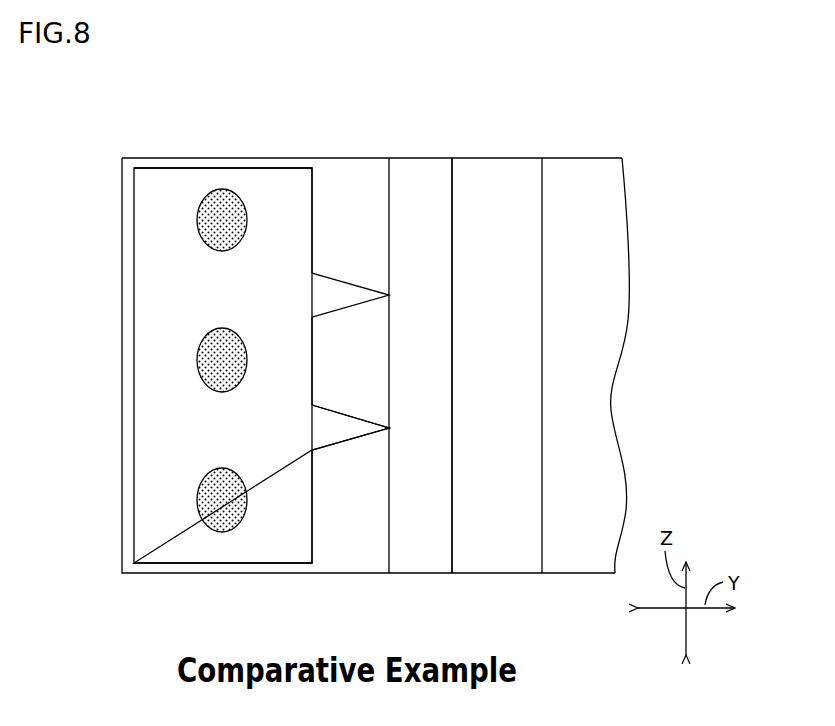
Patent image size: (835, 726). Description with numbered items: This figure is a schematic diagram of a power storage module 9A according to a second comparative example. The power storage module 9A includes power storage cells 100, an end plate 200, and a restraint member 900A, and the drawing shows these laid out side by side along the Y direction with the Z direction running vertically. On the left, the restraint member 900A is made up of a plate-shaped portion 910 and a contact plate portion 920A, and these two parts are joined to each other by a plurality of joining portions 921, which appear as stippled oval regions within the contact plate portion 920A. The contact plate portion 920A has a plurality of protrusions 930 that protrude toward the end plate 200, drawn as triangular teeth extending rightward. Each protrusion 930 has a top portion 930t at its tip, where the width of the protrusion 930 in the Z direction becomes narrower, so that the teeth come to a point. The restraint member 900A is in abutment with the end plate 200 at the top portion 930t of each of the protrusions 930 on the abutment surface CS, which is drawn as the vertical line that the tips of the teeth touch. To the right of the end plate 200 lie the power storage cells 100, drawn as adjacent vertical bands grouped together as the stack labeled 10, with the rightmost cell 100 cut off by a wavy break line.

The power storage module 9A is at (137, 128).
The restraint member 900A is at (377, 103).
The contact plate portion 920A is at (273, 182).
The joining portions 921 is at (210, 203).
The plate-shaped portion 910 is at (347, 182).
The protrusions 930 is at (348, 430).
The top portion 930t is at (404, 432).
The abutment surface CS is at (389, 157).
The end plate 200 is at (420, 182).
The laminated body 10 is at (607, 103).
The power storage cells 100 is at (498, 182).